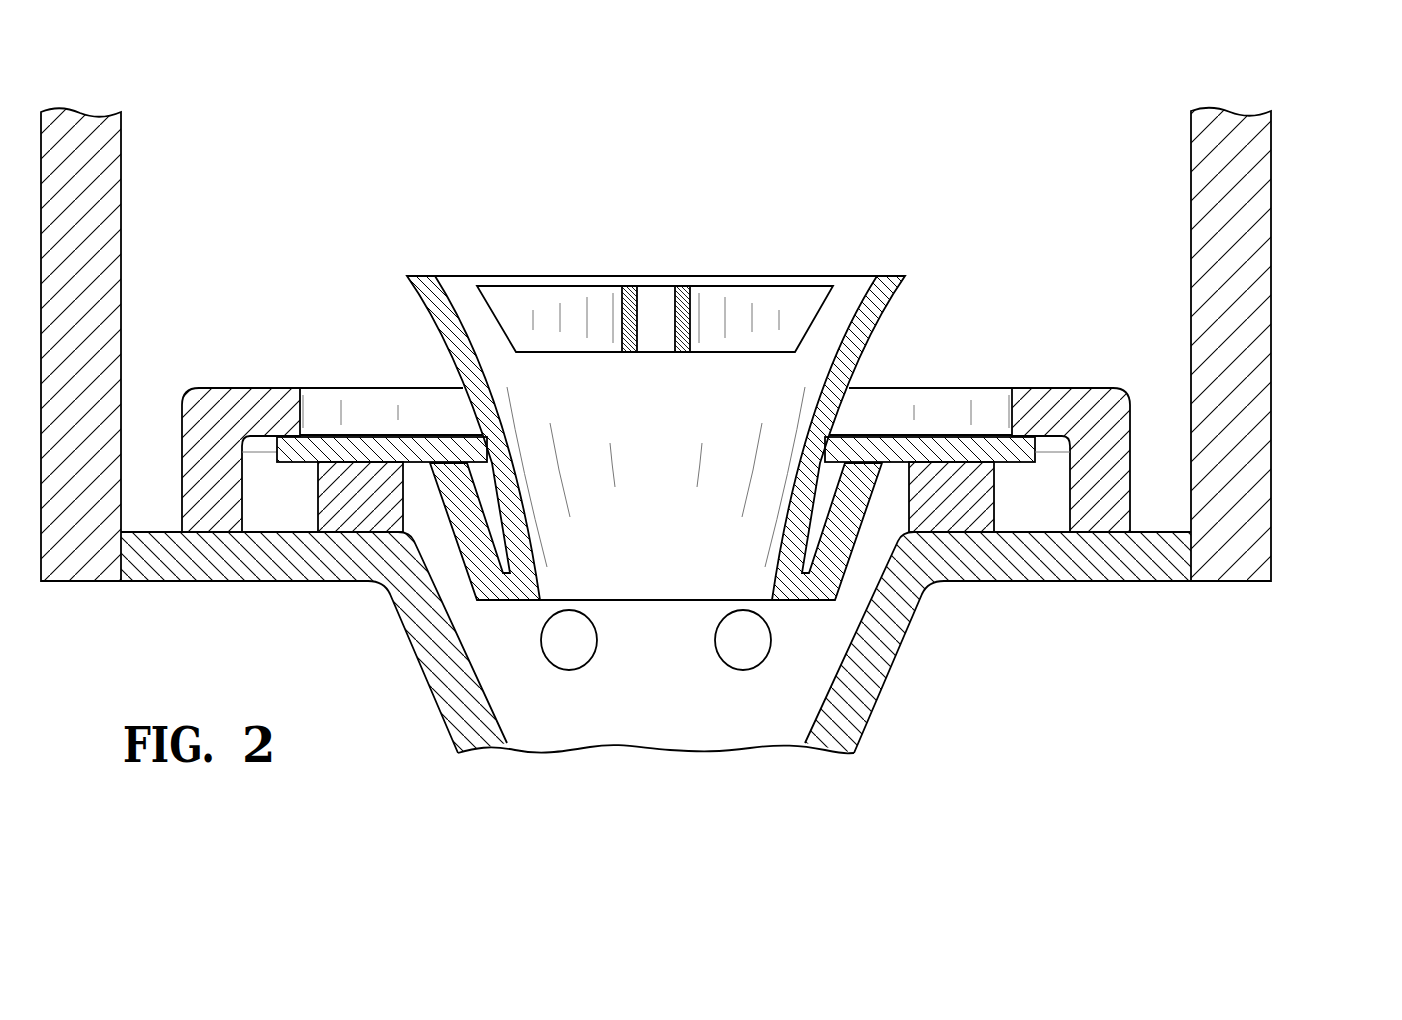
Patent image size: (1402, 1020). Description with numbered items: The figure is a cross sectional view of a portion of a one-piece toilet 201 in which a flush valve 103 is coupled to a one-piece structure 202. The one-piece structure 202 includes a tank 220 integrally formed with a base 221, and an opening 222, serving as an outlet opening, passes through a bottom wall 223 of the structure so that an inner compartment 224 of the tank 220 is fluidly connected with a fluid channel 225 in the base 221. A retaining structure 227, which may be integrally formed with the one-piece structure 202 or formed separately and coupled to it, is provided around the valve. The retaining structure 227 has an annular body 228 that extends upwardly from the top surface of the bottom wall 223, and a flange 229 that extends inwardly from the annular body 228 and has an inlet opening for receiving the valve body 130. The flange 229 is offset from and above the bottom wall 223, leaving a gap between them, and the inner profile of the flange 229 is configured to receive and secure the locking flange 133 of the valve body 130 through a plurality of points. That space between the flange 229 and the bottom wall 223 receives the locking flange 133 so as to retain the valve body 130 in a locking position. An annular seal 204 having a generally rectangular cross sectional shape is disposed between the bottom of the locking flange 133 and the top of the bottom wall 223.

The flush valve 103 is at (879, 250).
The valve body 130 is at (748, 303).
The locking flange 133 is at (918, 447).
The one-piece toilet 201 is at (768, 367).
The one-piece structure 202 is at (1043, 362).
The annular seal 204 is at (348, 517).
The tank 220 is at (1250, 228).
The base 221 is at (920, 690).
The opening 222 is at (630, 624).
The bottom wall 223 is at (1073, 562).
The inner compartment 224 is at (480, 172).
The fluid channel 225 is at (644, 689).
The retaining structure 227 is at (320, 382).
The annular body 228 is at (197, 447).
The flange 229 is at (246, 405).